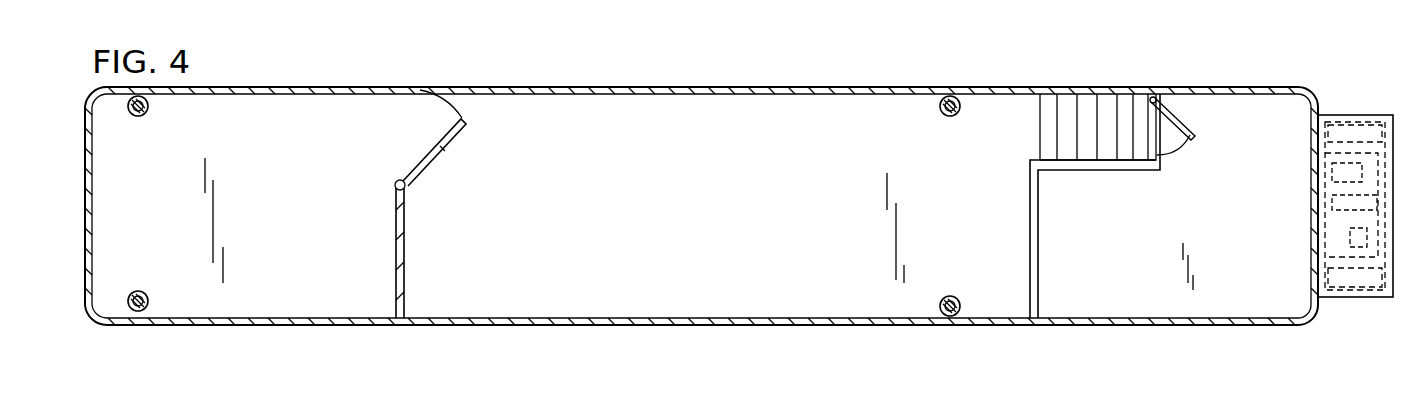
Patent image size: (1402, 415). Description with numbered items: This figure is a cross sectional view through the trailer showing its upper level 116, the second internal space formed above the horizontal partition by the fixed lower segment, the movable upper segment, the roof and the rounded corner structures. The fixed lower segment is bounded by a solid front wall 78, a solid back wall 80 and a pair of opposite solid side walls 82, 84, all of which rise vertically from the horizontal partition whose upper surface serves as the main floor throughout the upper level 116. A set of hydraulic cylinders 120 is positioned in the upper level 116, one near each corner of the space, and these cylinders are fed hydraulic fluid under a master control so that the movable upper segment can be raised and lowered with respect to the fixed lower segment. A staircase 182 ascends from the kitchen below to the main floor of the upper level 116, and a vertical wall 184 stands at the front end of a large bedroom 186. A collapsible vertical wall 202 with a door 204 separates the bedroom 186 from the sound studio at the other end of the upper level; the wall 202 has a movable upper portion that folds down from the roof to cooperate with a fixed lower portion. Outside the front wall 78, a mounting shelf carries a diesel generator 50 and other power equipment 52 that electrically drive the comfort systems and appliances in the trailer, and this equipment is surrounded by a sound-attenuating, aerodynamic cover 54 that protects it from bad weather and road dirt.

The diesel generator 50 is at (1335, 206).
The power equipment 52 is at (1335, 172).
The cover 54 is at (1384, 120).
The front wall 78 is at (1318, 112).
The back wall 80 is at (90, 213).
The side wall 82 is at (578, 325).
The side wall 84 is at (712, 88).
The upper level 116 is at (816, 151).
The hydraulic cylinder 120 is at (145, 113).
The staircase 182 is at (1092, 110).
The vertical wall 184 is at (1036, 240).
The bedroom 186 is at (745, 158).
The collapsible vertical wall 202 is at (401, 298).
The door 204 is at (440, 156).